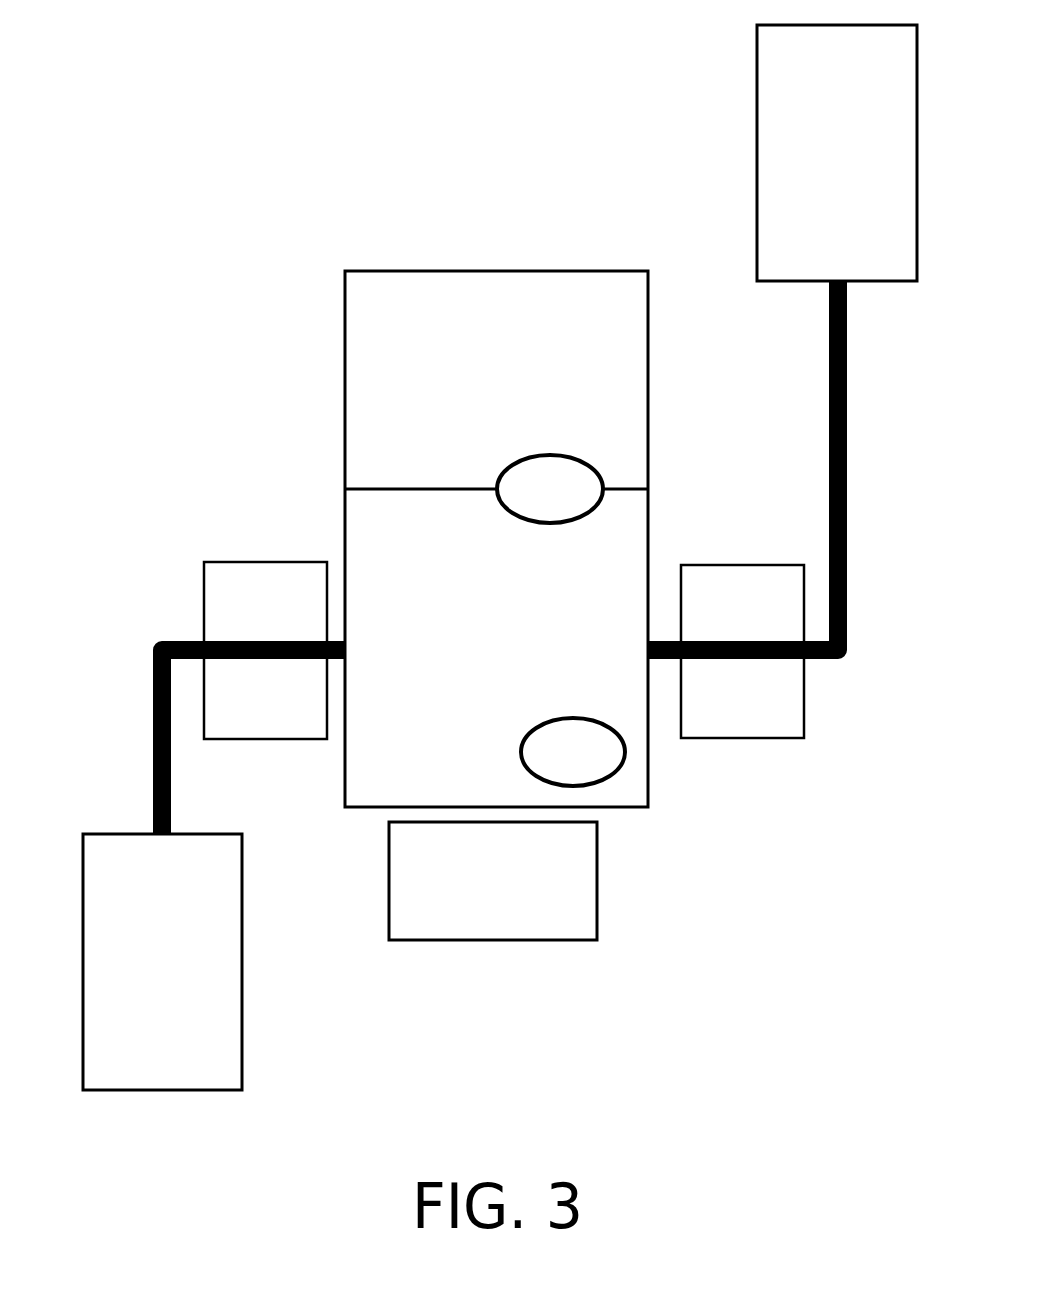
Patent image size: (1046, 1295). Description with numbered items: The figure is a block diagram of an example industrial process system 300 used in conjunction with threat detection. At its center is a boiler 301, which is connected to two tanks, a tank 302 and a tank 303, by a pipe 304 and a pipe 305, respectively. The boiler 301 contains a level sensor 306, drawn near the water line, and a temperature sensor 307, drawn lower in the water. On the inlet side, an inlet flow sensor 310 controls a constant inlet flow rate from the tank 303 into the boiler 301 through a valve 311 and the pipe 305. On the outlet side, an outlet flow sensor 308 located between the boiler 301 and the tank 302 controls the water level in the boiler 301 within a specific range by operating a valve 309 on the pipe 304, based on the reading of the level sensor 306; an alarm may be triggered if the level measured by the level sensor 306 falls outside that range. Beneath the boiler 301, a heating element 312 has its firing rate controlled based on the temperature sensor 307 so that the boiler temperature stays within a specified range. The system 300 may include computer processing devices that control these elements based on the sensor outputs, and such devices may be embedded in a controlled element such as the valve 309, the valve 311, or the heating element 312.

The industrial process system 300 is at (238, 161).
The boiler 301 is at (563, 331).
The tank 302 is at (182, 991).
The tank 303 is at (857, 181).
The pipe 304 is at (153, 693).
The pipe 305 is at (828, 422).
The level sensor 306 is at (568, 504).
The temperature sensor 307 is at (593, 766).
The outlet flow sensor 308 is at (285, 632).
The valve 309 is at (285, 724).
The inlet flow sensor 310 is at (763, 634).
The valve 311 is at (763, 726).
The heating element 312 is at (513, 921).